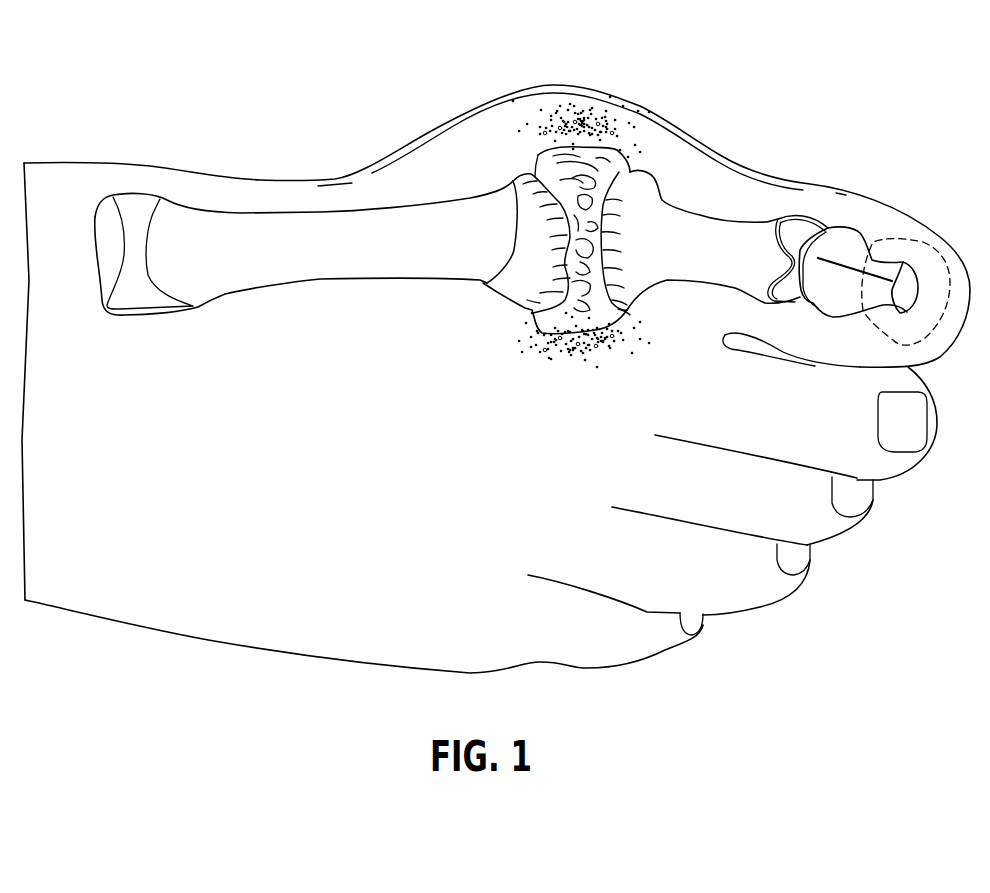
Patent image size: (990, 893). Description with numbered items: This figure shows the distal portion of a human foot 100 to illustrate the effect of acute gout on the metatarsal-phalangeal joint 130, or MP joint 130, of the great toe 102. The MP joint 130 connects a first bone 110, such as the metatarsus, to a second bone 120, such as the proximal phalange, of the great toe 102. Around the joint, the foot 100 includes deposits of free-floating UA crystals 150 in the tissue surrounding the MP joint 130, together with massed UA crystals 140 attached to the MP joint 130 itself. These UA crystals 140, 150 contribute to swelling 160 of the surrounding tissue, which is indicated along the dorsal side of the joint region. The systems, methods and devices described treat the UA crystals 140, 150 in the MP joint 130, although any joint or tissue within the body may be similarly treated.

The foot 100 is at (832, 83).
The great toe 102 is at (847, 178).
The first bone 110 is at (310, 228).
The second bone 120 is at (697, 237).
The metatarsal-phalangeal joint 130 is at (587, 148).
The massed UA crystals 140 is at (593, 182).
The free-floating UA crystals 150 is at (647, 370).
The swelling 160 is at (530, 127).